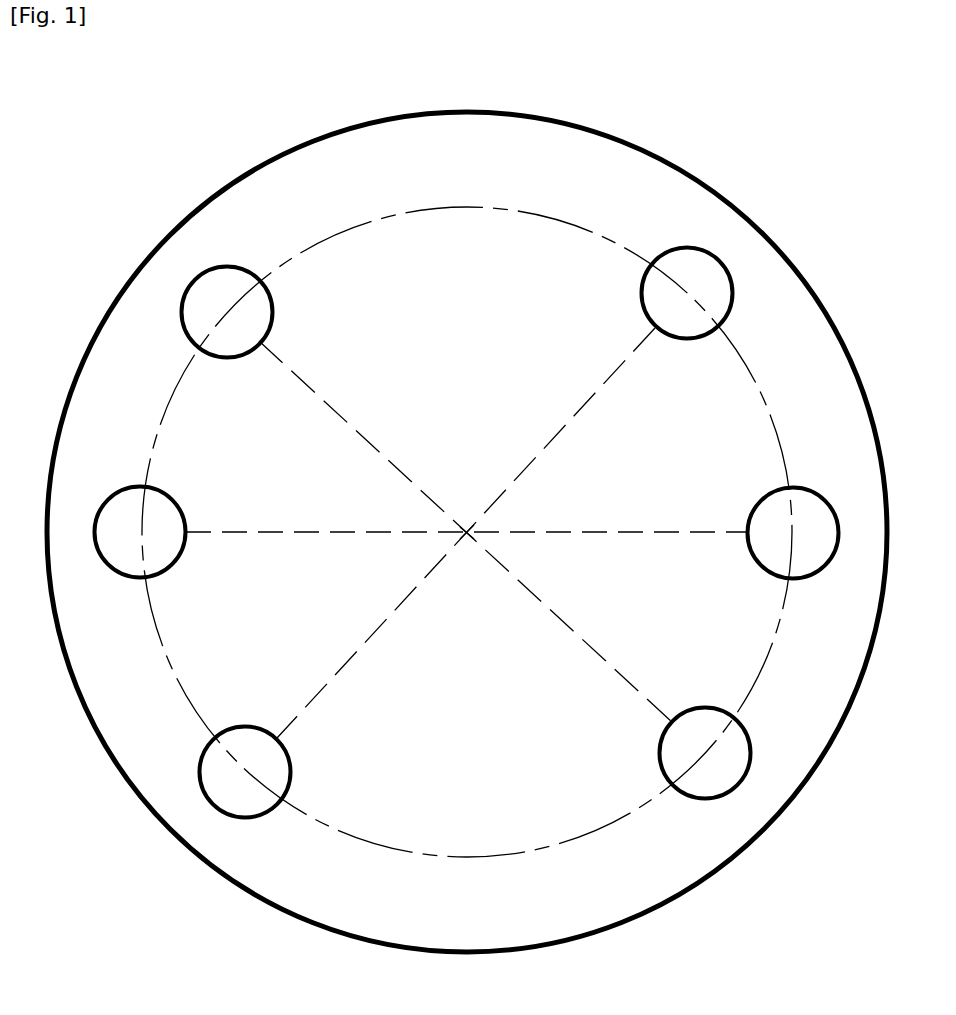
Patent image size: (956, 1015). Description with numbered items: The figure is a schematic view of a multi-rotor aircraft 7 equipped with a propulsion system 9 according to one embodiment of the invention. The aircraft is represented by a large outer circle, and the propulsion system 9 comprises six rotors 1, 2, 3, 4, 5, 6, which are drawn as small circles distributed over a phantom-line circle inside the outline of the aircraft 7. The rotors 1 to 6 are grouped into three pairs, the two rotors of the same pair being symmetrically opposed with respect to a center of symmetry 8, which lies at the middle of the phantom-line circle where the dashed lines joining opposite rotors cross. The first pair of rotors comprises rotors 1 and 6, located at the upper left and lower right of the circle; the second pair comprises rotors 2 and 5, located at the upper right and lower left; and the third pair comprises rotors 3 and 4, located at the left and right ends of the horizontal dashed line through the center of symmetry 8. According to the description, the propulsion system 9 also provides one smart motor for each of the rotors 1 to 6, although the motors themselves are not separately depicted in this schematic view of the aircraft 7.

The rotor 1 is at (237, 327).
The rotor 2 is at (697, 308).
The rotor 3 is at (150, 550).
The rotor 4 is at (803, 551).
The rotor 5 is at (255, 788).
The rotor 6 is at (715, 770).
The multi-rotor aircraft 7 is at (455, 793).
The center of symmetry 8 is at (467, 537).
The propulsion system 9 is at (837, 333).